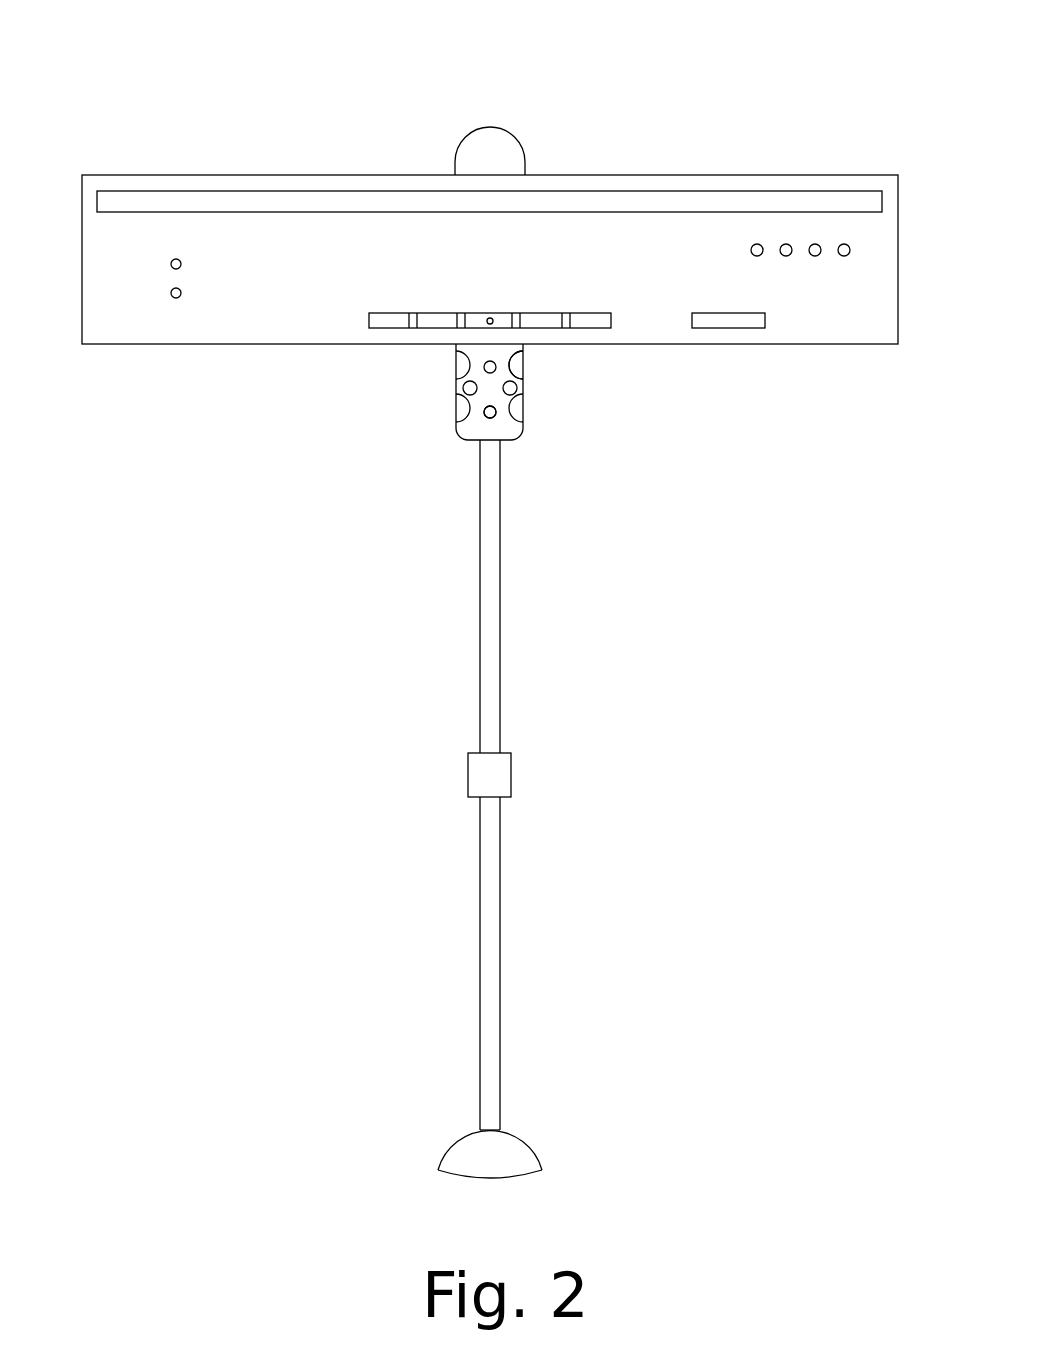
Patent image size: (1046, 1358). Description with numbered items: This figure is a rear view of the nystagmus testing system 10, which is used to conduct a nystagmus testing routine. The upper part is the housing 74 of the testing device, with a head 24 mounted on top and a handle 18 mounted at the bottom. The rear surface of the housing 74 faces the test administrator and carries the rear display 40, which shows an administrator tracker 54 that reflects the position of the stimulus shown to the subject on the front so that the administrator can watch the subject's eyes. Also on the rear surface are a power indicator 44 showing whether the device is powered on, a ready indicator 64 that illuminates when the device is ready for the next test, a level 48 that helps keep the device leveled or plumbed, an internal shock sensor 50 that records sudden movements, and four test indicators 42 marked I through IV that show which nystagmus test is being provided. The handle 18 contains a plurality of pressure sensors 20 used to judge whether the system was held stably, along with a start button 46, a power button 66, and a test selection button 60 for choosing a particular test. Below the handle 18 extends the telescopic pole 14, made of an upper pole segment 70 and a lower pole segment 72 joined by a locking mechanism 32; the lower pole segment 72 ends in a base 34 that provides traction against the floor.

The nystagmus testing system 10 is at (128, 83).
The telescopic pole 14 is at (529, 838).
The handle 18 is at (455, 390).
The pressure sensors 20 is at (525, 364).
The head 24 is at (490, 126).
The locking mechanism 32 is at (497, 777).
The base 34 is at (505, 1172).
The rear display 40 is at (622, 197).
The test indicators 42 is at (844, 256).
The power indicator 44 is at (181, 262).
The start button 46 is at (517, 388).
The level 48 is at (383, 323).
The internal shock sensor 50 is at (733, 318).
The administrator tracker 54 is at (463, 388).
The test selection button 60 is at (490, 362).
The ready indicator 64 is at (181, 294).
The power button 66 is at (490, 418).
The upper pole segment 70 is at (488, 608).
The lower pole segment 72 is at (488, 912).
The housing 74 is at (898, 258).